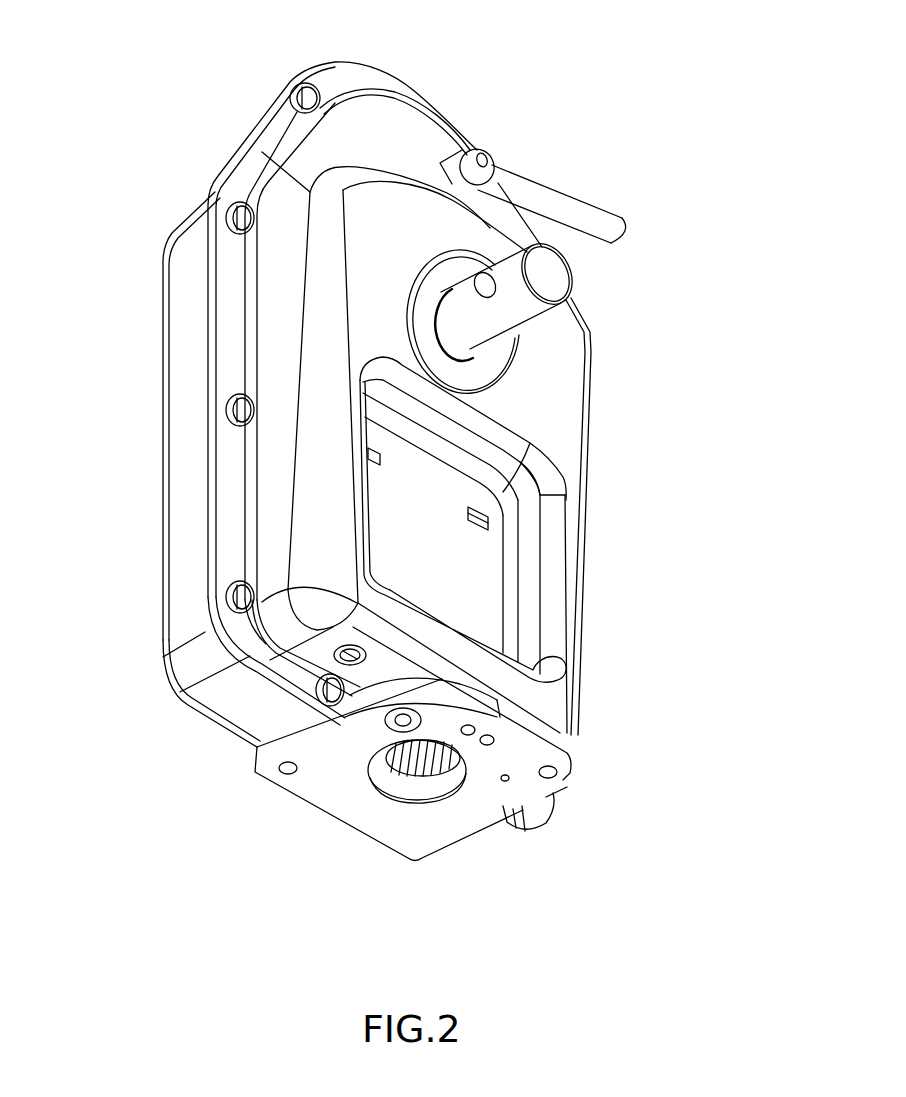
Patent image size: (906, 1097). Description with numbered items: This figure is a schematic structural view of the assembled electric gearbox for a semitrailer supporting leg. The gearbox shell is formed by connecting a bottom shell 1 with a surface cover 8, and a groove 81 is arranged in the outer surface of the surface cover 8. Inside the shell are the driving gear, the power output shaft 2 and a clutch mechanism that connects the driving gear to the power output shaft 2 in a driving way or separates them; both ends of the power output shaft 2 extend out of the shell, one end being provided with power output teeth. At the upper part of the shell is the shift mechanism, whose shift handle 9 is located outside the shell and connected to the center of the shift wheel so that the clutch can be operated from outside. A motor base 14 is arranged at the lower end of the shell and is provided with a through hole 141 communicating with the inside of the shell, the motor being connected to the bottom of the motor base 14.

The bottom shell 1 is at (187, 338).
The surface cover 8 is at (377, 227).
The groove 81 is at (463, 553).
The power output shaft 2 is at (548, 275).
The shift handle 9 is at (583, 216).
The motor base 14 is at (327, 753).
The through hole 141 is at (403, 770).